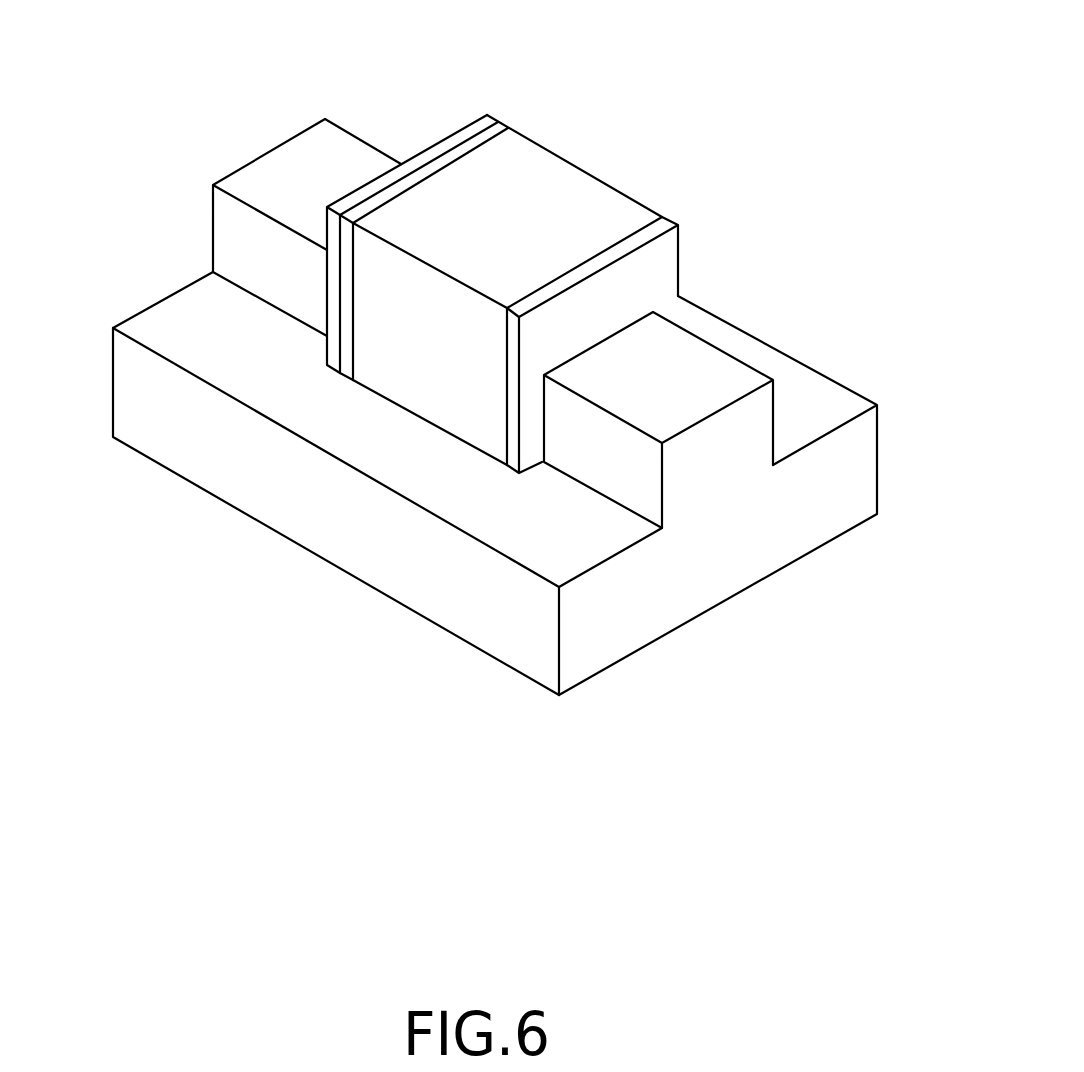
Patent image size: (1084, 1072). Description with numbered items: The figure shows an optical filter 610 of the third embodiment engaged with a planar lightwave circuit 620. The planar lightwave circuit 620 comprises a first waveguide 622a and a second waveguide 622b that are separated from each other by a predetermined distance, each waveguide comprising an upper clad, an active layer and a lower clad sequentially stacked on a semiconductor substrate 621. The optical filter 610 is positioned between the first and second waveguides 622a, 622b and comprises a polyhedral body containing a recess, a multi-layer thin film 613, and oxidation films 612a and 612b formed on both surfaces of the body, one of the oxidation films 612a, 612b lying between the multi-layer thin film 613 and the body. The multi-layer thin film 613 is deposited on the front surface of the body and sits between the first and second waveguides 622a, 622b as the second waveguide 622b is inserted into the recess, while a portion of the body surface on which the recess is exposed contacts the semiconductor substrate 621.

The optical filter 610 is at (535, 247).
The oxidation film 612a is at (502, 130).
The oxidation film 612b is at (668, 218).
The multi-layer thin film 613 is at (473, 130).
The planar lightwave circuit 620 is at (479, 483).
The semiconductor substrate 621 is at (293, 505).
The first waveguide 622a is at (225, 245).
The second waveguide 622b is at (643, 485).